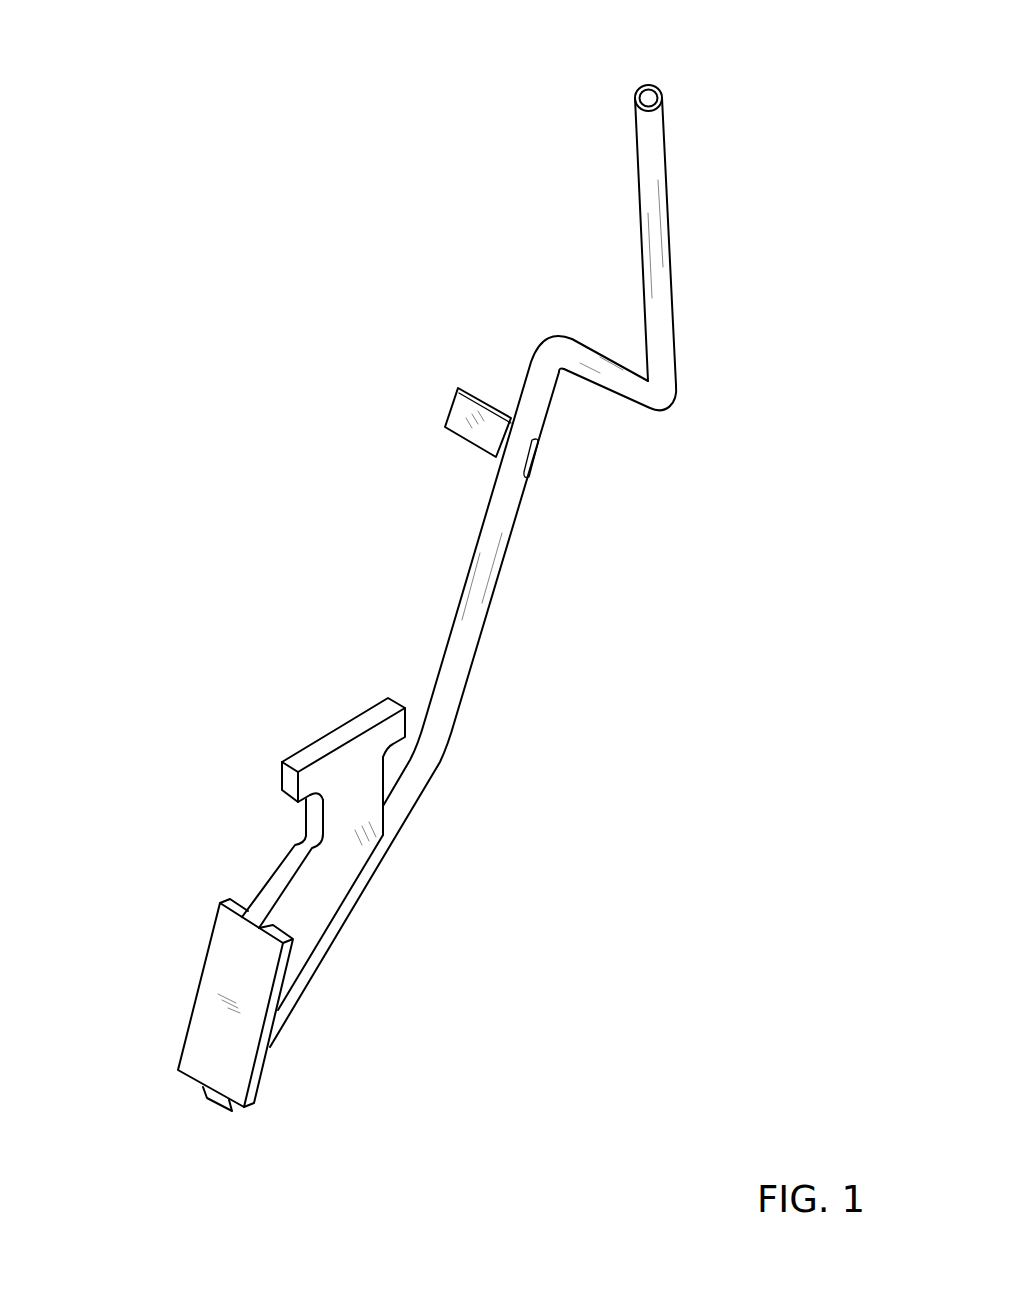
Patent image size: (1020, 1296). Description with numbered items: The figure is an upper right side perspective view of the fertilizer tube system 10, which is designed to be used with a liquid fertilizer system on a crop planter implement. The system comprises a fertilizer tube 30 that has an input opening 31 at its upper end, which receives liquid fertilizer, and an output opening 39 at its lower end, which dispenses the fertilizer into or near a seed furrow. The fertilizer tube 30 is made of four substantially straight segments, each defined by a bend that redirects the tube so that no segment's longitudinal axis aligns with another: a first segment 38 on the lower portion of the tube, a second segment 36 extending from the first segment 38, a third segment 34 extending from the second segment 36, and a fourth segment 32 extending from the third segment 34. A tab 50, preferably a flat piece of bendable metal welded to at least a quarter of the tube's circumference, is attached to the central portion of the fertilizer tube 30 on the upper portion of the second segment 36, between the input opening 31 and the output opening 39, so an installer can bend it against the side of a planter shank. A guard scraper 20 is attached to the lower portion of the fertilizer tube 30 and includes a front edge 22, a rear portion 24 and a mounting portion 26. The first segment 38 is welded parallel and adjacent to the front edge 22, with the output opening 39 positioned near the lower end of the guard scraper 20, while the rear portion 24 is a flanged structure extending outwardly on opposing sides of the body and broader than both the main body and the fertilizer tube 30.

The fertilizer tube system 10 is at (205, 122).
The guard scraper 20 is at (265, 874).
The front edge 22 is at (382, 856).
The rear portion 24 is at (207, 1030).
The mounting portion 26 is at (332, 732).
The fertilizer tube 30 is at (497, 587).
The input opening 31 is at (649, 95).
The fourth segment 32 is at (675, 310).
The third segment 34 is at (608, 353).
The second segment 36 is at (517, 508).
The first segment 38 is at (363, 893).
The output opening 39 is at (217, 1112).
The tab 50 is at (456, 401).